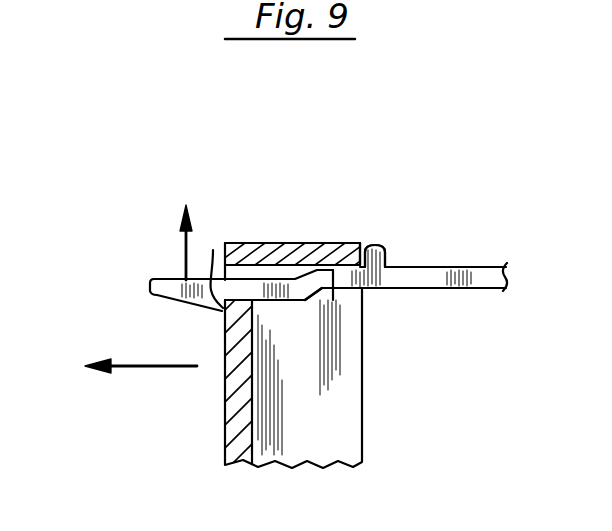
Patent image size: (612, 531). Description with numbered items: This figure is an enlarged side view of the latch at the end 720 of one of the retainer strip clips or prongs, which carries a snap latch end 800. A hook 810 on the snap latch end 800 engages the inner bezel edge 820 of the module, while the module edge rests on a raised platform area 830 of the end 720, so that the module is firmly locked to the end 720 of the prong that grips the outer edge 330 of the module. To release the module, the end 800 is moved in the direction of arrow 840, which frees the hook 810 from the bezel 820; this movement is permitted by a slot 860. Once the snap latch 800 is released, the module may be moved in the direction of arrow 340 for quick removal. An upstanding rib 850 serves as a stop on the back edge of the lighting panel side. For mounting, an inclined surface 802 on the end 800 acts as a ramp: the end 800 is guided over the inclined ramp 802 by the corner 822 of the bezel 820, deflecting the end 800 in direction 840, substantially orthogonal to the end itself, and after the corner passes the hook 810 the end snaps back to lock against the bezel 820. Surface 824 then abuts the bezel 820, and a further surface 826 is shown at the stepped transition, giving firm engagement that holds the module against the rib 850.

The outer edge 330 is at (285, 243).
The arrow 340 is at (137, 368).
The end 720 is at (410, 244).
The snap latch end 800 is at (170, 290).
The inclined surface 802 is at (196, 308).
The hook 810 is at (213, 250).
The inner bezel edge 820 is at (237, 412).
The corner 822 is at (253, 300).
The surface 824 is at (283, 300).
The beveled portion 826 is at (323, 292).
The raised platform area 830 is at (333, 245).
The arrow 840 is at (184, 245).
The upstanding rib 850 is at (380, 245).
The slot 860 is at (252, 262).